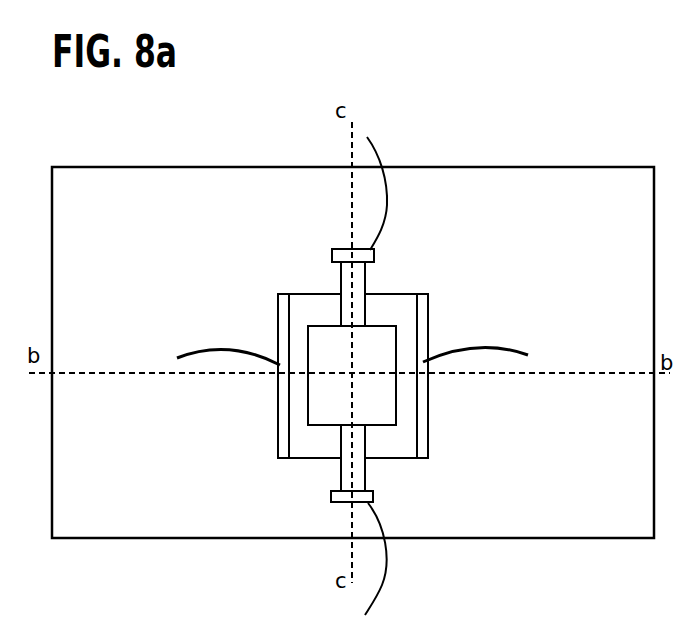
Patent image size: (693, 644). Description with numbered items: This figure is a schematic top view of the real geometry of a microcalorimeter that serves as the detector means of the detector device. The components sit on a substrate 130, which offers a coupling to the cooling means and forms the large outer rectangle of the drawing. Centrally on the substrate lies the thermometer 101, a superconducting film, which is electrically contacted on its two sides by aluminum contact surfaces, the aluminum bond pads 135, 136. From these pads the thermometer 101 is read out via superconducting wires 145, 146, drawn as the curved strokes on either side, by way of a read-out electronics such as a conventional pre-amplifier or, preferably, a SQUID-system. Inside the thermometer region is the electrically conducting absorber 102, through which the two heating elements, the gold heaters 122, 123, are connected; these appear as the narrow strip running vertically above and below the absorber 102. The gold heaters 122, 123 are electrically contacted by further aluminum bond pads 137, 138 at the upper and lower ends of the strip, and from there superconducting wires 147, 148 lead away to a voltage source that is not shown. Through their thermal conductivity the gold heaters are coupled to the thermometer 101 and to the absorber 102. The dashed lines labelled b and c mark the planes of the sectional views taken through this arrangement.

The thermometer 101 is at (302, 448).
The absorber 102 is at (380, 342).
The gold heater 122 is at (357, 472).
The gold heater 123 is at (345, 287).
The substrate 130 is at (100, 228).
The aluminum bond pad 135 is at (278, 340).
The aluminum bond pad 136 is at (423, 398).
The aluminum bond pad 137 is at (335, 252).
The aluminum bond pad 138 is at (336, 503).
The superconducting wire 145 is at (193, 342).
The superconducting wire 146 is at (487, 340).
The superconducting wire 147 is at (396, 152).
The superconducting wire 148 is at (391, 550).